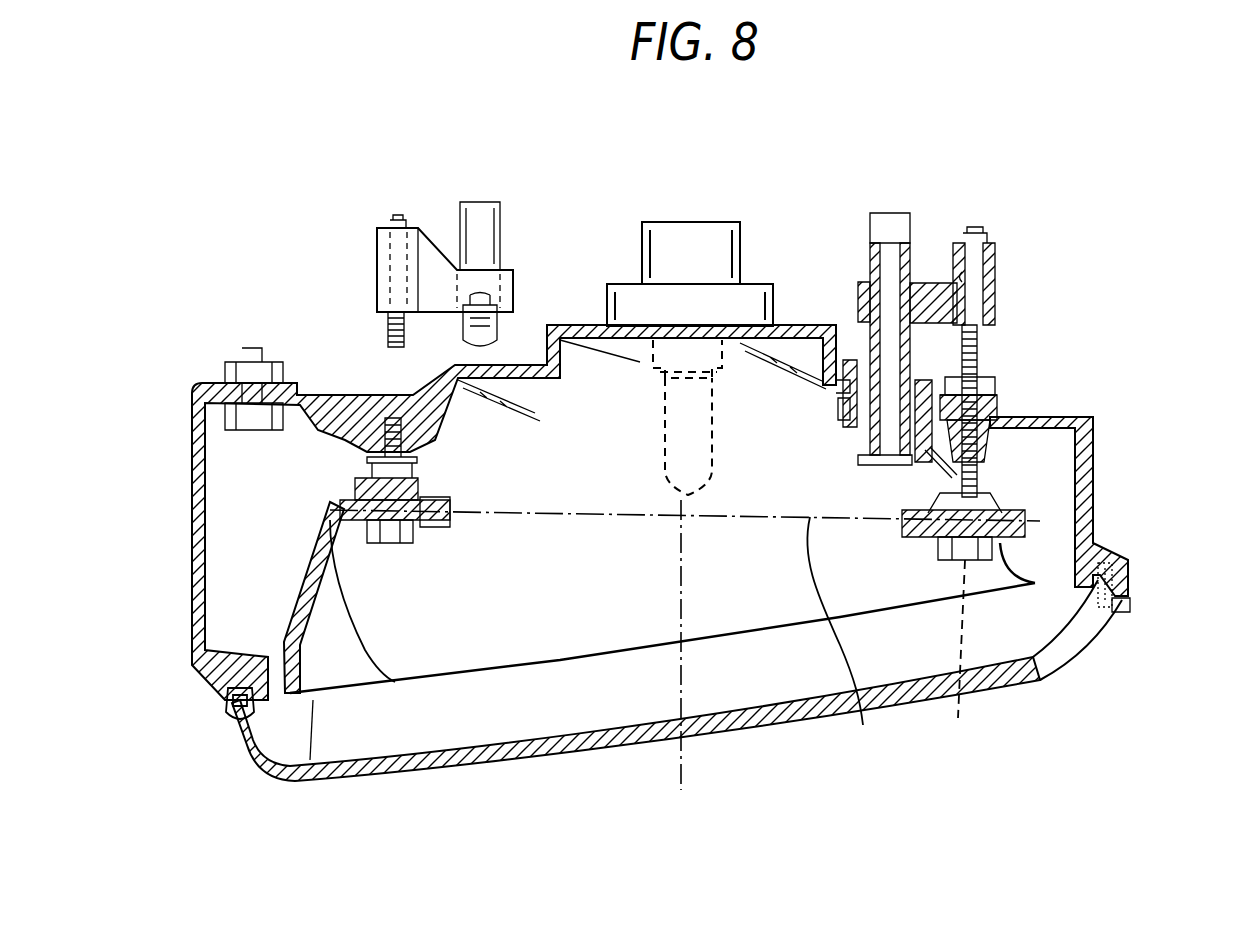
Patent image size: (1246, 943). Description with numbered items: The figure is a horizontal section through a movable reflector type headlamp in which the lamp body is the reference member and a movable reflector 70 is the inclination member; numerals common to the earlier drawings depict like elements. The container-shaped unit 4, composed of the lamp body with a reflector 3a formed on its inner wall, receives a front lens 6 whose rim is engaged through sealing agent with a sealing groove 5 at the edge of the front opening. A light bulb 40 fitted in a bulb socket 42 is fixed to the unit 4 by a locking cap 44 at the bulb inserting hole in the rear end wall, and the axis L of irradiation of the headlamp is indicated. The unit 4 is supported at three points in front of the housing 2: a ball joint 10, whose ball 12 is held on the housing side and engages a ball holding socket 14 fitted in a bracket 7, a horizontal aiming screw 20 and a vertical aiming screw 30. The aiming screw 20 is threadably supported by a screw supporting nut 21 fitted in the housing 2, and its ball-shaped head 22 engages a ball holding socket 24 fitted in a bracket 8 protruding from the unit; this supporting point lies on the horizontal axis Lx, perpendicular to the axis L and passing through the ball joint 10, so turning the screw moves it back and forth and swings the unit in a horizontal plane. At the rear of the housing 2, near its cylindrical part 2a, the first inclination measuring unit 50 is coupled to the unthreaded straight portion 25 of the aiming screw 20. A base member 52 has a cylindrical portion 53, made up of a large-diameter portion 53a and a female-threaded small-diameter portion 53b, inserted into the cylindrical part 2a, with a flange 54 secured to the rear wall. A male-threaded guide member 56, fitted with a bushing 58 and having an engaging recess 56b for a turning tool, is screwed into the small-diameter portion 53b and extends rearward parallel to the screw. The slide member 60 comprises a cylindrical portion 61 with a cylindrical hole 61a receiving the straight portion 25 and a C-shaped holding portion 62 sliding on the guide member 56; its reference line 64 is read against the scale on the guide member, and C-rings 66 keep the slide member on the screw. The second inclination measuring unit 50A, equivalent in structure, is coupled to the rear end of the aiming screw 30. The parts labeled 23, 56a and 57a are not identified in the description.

The housing 2 is at (333, 385).
The cylindrical part 2a is at (840, 390).
The reflector 3a is at (310, 760).
The container-shaped unit 4 is at (598, 770).
The sealing groove 5 is at (236, 705).
The front lens 6 is at (393, 775).
The bracket 7 is at (425, 522).
The bracket 8 is at (1010, 640).
The ball joint 10 is at (322, 512).
The ball 12 is at (358, 482).
The ball holding socket 14 is at (362, 535).
The horizontal aiming screw 20 is at (985, 366).
The screw supporting nut 21 is at (995, 422).
The ball-shaped head 22 is at (1030, 508).
The screw axis 23 is at (969, 656).
The ball holding socket 24 is at (1025, 490).
The straight portion 25 is at (978, 292).
The vertical aiming screw 30 is at (383, 330).
The light bulb 40 is at (655, 427).
The bulb socket 42 is at (715, 222).
The locking cap 44 is at (628, 282).
The first inclination measuring unit 50 is at (1012, 262).
The second inclination measuring unit 50A is at (372, 210).
The base member 52 is at (850, 363).
The cylindrical portion 53 is at (1176, 378).
The large-diameter portion 53a is at (990, 385).
The small-diameter portion 53b is at (1010, 402).
The flange 54 is at (990, 352).
The guide member 56 is at (476, 201).
The bolt end 56a is at (880, 440).
The engaging recess 56b is at (888, 213).
The engaging portion 57a is at (487, 300).
The bushing 58 is at (845, 410).
The slide member 60 is at (378, 262).
The cylindrical portion 61 is at (998, 262).
The cylindrical hole 61a is at (962, 277).
The holding portion 62 is at (860, 300).
The reference line 64 is at (505, 325).
The C-rings 66 is at (412, 226).
The movable reflector 70 is at (300, 605).
The axis of irradiation L is at (690, 770).
The horizontal axis Lx is at (841, 640).